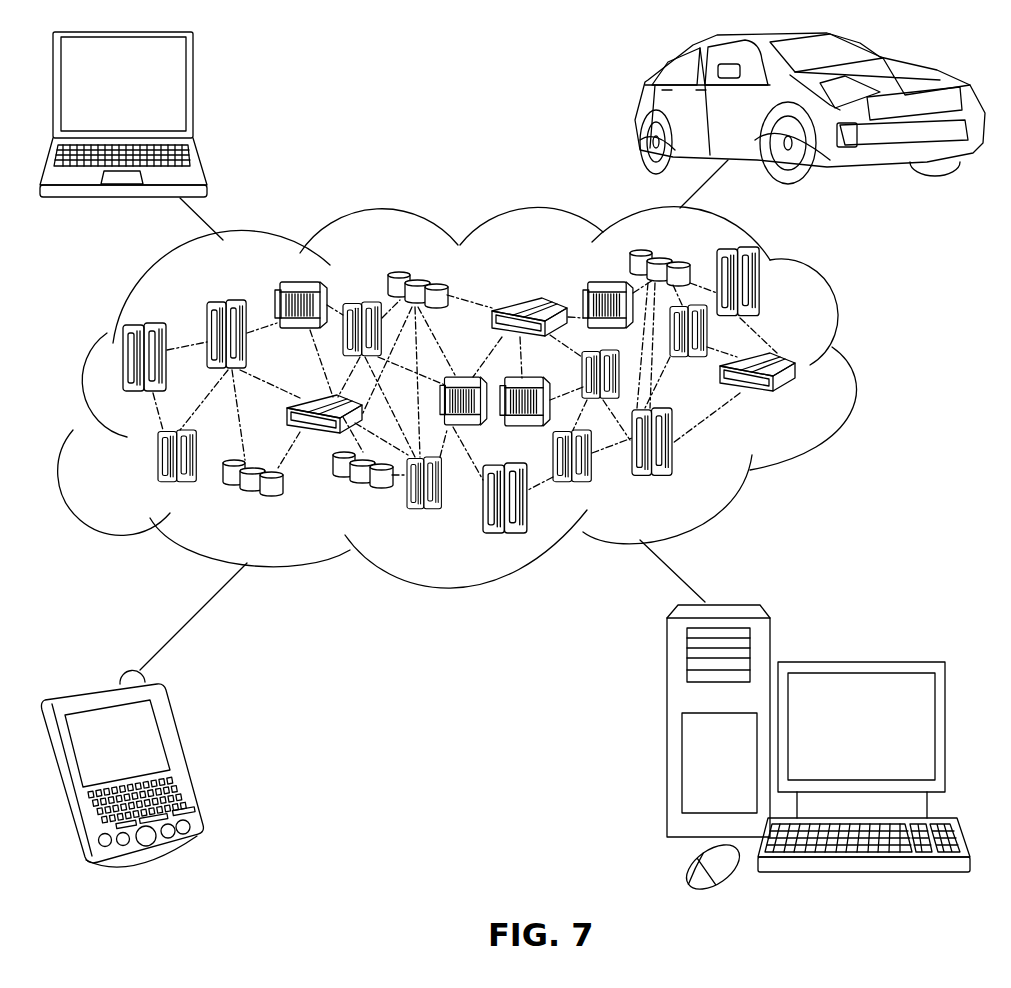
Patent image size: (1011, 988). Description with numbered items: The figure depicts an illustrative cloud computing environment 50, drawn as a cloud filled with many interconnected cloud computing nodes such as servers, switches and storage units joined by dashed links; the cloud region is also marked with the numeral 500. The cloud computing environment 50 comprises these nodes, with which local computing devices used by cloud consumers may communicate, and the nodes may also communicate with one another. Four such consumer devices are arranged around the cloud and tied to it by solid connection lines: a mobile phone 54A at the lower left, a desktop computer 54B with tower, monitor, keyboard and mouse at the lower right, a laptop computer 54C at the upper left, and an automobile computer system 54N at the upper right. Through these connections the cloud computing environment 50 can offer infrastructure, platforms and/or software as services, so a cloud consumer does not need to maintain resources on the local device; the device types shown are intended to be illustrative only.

The cloud computing environment 50 is at (860, 368).
The computing nodes network 500 is at (803, 401).
The mobile phone 54A is at (183, 755).
The desktop computer 54B is at (858, 662).
The laptop computer 54C is at (193, 92).
The automobile computer system 54N is at (633, 110).